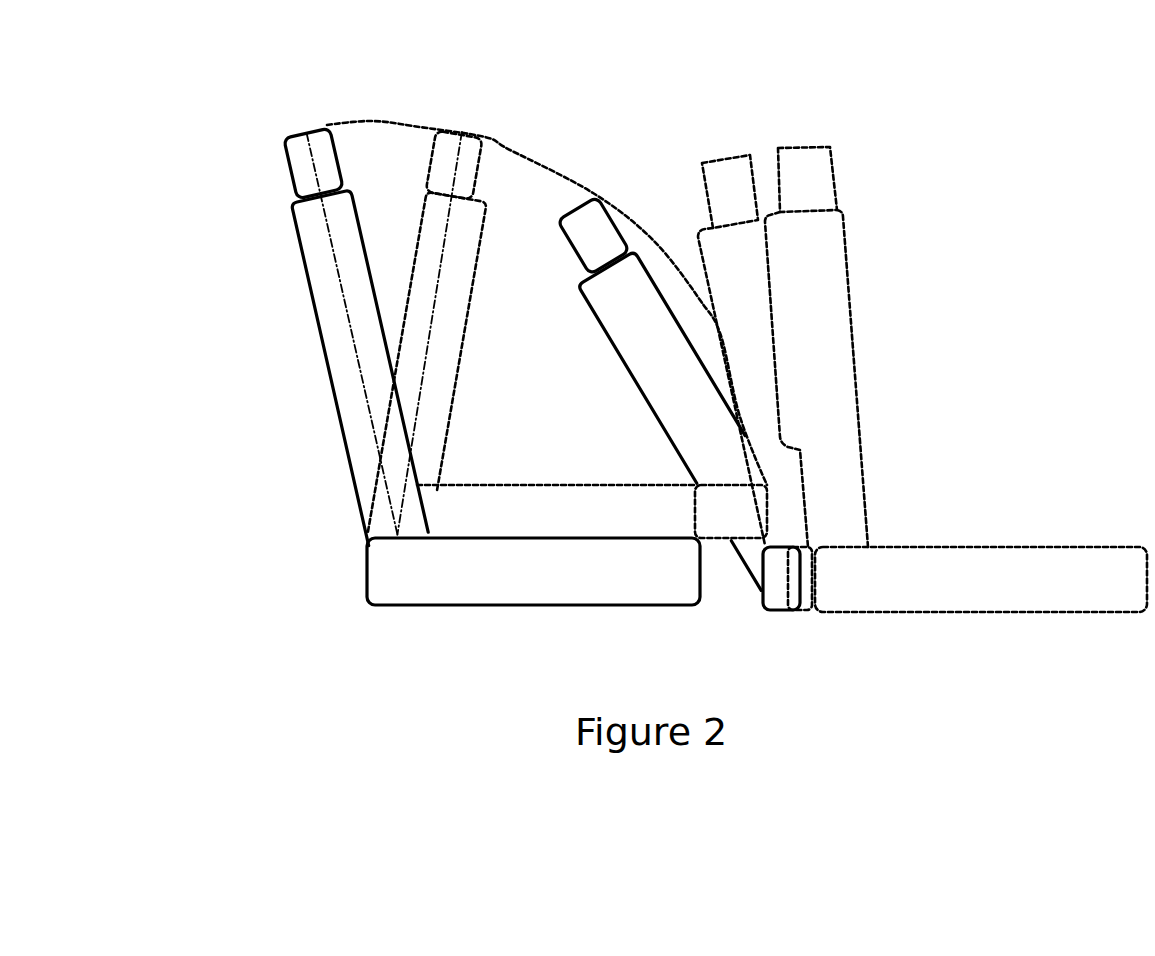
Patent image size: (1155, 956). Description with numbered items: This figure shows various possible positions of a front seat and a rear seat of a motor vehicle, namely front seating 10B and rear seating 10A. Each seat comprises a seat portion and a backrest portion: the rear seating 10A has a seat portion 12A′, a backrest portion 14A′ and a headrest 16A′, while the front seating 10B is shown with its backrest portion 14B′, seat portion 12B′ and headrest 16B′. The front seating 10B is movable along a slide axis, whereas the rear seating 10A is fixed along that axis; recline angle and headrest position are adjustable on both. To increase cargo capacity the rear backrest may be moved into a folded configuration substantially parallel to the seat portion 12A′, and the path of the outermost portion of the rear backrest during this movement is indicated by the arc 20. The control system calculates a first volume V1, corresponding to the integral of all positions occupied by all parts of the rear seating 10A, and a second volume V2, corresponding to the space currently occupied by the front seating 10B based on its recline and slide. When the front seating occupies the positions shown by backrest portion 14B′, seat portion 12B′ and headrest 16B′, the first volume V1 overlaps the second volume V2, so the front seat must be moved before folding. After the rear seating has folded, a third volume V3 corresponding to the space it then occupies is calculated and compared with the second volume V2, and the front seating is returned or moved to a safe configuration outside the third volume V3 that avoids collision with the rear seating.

The rear seating 10A is at (212, 180).
The front seating 10B is at (890, 187).
The seat portion of rear seating 12A′ is at (405, 593).
The seat portion of front seating in first position 12B′ is at (778, 592).
The backrest portion of rear seating 14A′ is at (328, 330).
The backrest portion of front seating in first position 14B′ is at (642, 300).
The headrest of rear seating 16A′ is at (297, 145).
The headrest of front seating in first position 16B′ is at (597, 220).
The arc 20 is at (515, 150).
The first volume V1 is at (515, 340).
The second volume V2 is at (659, 363).
The third volume V3 is at (651, 514).